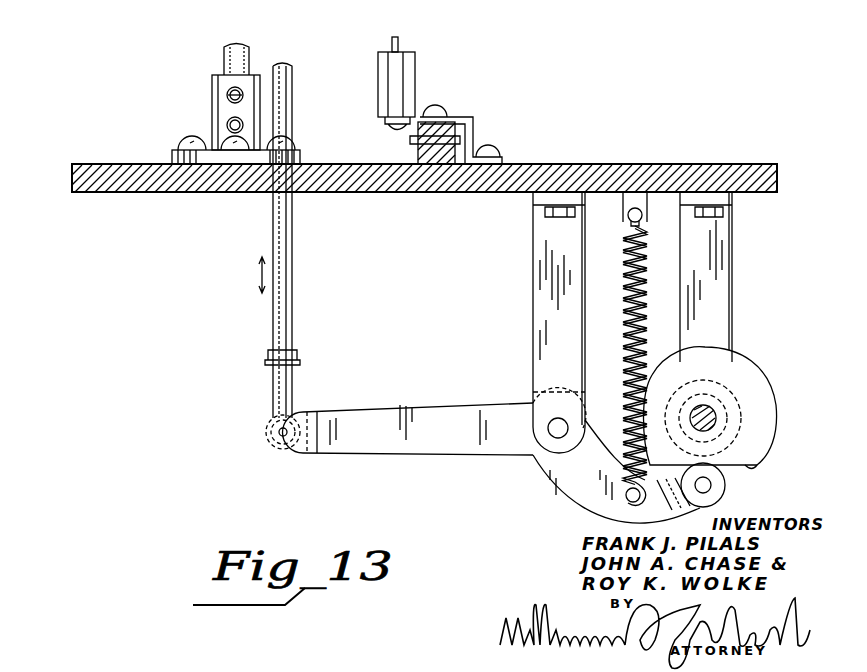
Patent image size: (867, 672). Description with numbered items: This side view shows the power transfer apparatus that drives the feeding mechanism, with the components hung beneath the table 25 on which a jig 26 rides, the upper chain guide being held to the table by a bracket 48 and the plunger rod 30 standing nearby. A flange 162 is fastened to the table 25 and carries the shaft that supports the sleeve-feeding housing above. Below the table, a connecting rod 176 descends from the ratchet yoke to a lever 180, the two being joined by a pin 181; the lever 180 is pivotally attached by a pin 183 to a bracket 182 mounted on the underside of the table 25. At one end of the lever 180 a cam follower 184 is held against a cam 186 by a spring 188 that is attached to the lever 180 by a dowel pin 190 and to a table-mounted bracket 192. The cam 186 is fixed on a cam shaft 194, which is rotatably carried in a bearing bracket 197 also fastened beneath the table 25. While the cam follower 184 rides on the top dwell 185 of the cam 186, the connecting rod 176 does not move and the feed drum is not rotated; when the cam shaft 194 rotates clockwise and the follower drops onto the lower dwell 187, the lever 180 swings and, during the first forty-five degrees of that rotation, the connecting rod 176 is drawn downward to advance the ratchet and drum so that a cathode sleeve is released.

The table 25 is at (140, 164).
The jig 26 is at (378, 82).
The plunger rod 30 is at (398, 46).
The bracket 48 is at (475, 136).
The flange 162 is at (212, 98).
The connecting rod 176 is at (292, 280).
The lever 180 is at (426, 456).
The pin 181 is at (283, 440).
The bracket 182 is at (543, 305).
The pin 183 is at (556, 436).
The cam follower 184 is at (723, 494).
The top dwell 185 is at (738, 358).
The cam 186 is at (745, 382).
The lower dwell 187 is at (743, 468).
The spring 188 is at (628, 308).
The dowel pin 190 is at (627, 503).
The bracket 192 is at (629, 211).
The cam shaft 194 is at (715, 427).
The bearing bracket 197 is at (722, 272).